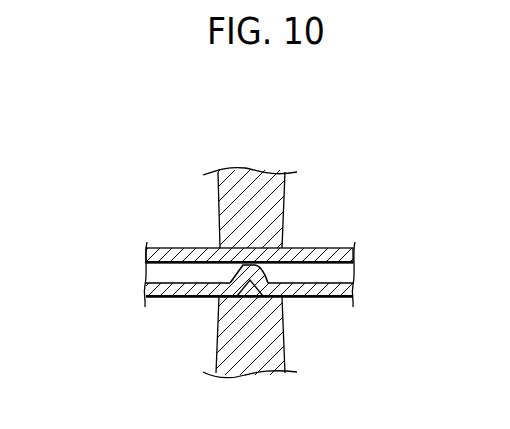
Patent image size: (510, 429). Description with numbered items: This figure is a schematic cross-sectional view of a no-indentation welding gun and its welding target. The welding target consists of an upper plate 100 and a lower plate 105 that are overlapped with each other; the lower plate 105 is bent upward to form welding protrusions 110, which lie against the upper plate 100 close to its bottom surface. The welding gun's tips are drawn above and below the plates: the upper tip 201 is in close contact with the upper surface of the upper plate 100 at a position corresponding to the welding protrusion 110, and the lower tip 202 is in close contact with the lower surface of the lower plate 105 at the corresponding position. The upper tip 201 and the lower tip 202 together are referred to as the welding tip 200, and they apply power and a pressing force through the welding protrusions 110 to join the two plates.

The upper plate 100 is at (336, 253).
The lower plate 105 is at (336, 292).
The welding protrusions 110 is at (263, 268).
The welding tip 200 is at (170, 273).
The upper tip 201 is at (227, 212).
The lower tip 202 is at (196, 337).